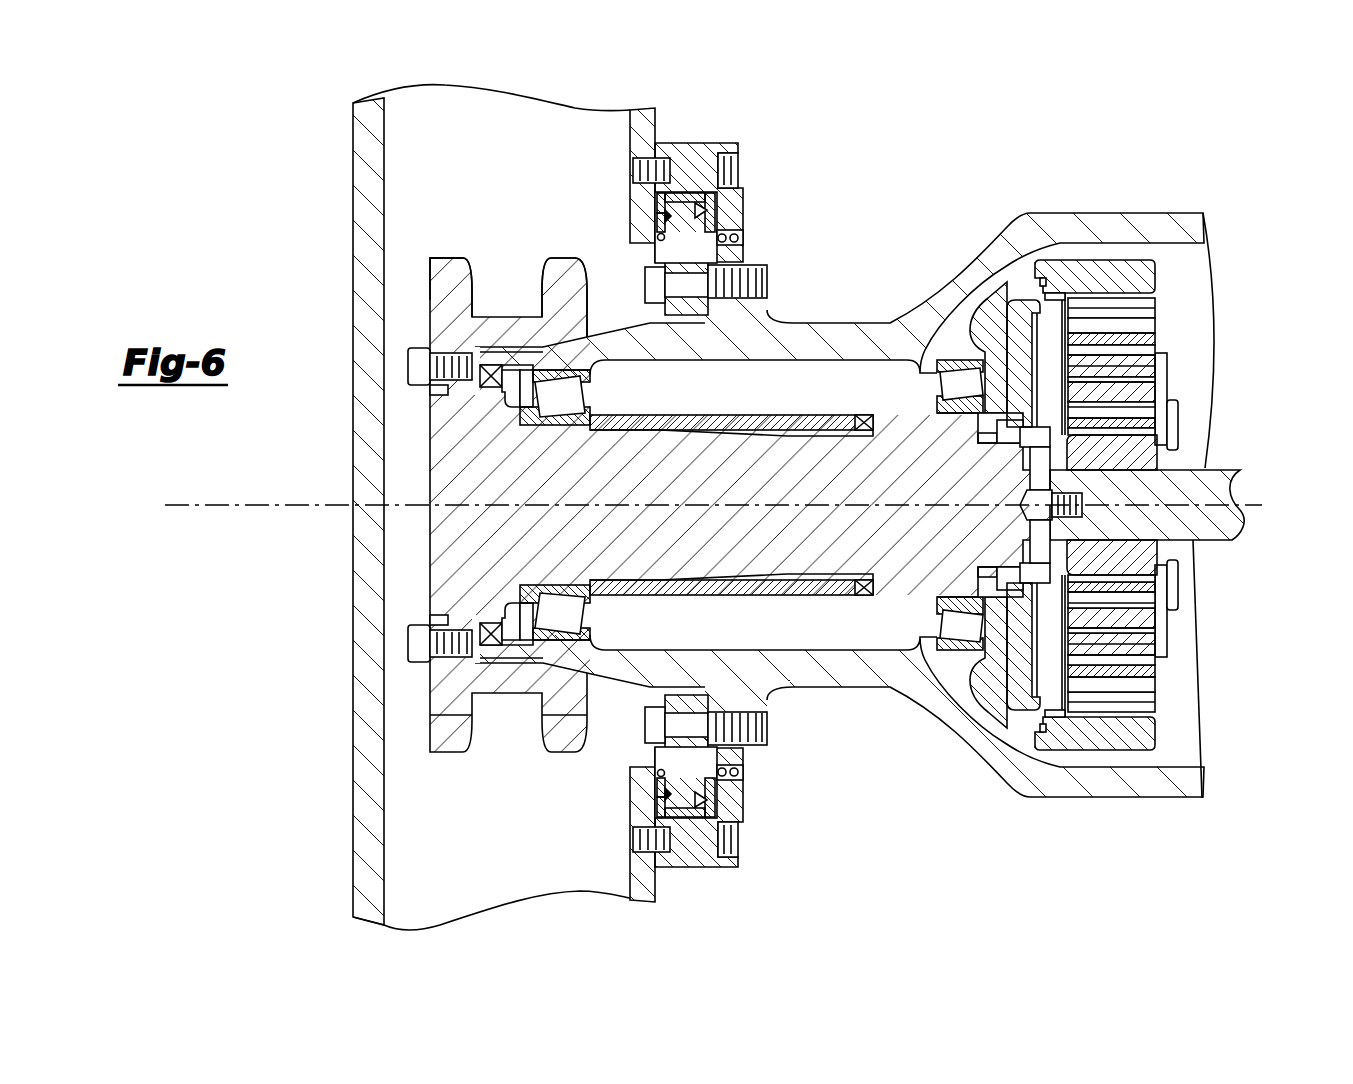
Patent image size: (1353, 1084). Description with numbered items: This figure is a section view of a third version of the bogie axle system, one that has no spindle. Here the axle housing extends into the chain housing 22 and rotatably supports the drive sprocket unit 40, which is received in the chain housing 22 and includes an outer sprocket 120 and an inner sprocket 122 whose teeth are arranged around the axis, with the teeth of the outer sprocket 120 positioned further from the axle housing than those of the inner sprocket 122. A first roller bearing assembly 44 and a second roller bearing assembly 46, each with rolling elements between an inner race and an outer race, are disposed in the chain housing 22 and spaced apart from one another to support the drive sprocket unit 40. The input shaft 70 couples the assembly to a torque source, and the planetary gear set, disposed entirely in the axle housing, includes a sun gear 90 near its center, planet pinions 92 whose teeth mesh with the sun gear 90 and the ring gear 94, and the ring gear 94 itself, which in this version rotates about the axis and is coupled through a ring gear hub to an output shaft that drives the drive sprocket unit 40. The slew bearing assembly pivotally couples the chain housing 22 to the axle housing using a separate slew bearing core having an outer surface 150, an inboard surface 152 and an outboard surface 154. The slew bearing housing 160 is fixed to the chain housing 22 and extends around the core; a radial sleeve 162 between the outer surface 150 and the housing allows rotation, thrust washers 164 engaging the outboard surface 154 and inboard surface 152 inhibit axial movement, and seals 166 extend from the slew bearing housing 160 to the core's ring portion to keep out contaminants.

The chain housing 22 is at (352, 218).
The drive sprocket unit 40 is at (437, 716).
The first roller bearing assembly 44 is at (595, 400).
The second roller bearing assembly 46 is at (937, 401).
The input shaft 70 is at (1223, 488).
The sun gear 90 is at (1147, 445).
The planet pinions 92 is at (1150, 355).
The ring gear 94 is at (1216, 274).
The outer sprocket 120 is at (453, 748).
The inner sprocket 122 is at (558, 743).
The outer surface 150 is at (688, 207).
The inboard surface 152 is at (706, 212).
The outboard surface 154 is at (665, 217).
The slew bearing housing 160 is at (714, 143).
The radial sleeve 162 is at (720, 180).
The thrust washer 164 is at (655, 202).
The seal 166 is at (726, 243).